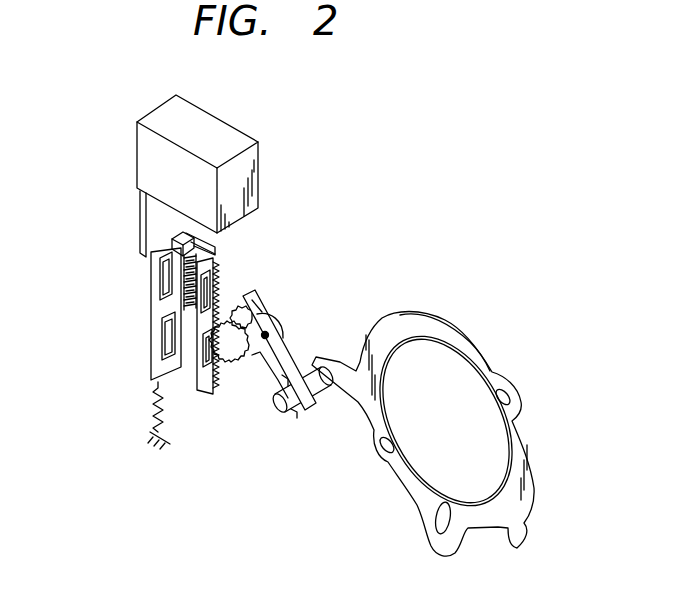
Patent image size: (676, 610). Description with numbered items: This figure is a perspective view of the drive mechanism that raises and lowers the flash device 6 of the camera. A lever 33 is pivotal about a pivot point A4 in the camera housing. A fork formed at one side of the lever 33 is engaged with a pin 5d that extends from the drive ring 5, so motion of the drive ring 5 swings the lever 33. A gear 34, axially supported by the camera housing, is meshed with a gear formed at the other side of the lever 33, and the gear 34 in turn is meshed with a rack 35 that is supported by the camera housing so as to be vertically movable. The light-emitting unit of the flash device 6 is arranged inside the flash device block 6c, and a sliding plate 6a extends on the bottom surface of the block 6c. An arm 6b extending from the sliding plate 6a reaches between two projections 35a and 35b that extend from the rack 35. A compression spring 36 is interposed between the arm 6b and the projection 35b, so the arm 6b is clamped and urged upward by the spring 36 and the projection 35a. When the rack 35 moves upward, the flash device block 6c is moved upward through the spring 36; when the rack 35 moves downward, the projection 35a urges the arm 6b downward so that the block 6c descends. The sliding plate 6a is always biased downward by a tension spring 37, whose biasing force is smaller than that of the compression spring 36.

The flash device 6 is at (130, 189).
The flash device block 6c is at (217, 122).
The sliding plate 6a is at (152, 240).
The arm 6b is at (173, 240).
The projection 35a is at (200, 238).
The compression spring 36 is at (190, 262).
The projection 35b is at (185, 306).
The rack 35 is at (203, 393).
The tension spring 37 is at (153, 413).
The gear 34 is at (232, 362).
The pin 5d is at (277, 412).
The lever 33 is at (278, 355).
The pivot point A4 is at (275, 320).
The drive ring 5 is at (422, 314).